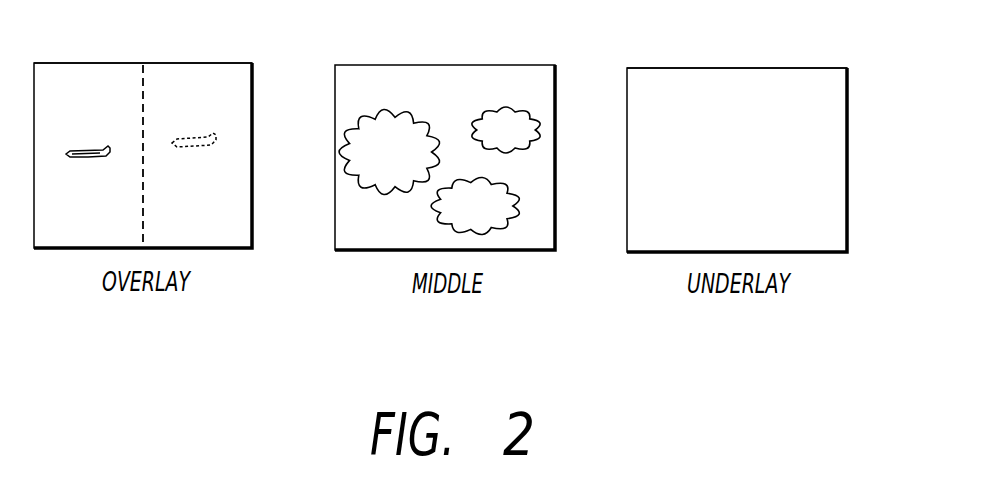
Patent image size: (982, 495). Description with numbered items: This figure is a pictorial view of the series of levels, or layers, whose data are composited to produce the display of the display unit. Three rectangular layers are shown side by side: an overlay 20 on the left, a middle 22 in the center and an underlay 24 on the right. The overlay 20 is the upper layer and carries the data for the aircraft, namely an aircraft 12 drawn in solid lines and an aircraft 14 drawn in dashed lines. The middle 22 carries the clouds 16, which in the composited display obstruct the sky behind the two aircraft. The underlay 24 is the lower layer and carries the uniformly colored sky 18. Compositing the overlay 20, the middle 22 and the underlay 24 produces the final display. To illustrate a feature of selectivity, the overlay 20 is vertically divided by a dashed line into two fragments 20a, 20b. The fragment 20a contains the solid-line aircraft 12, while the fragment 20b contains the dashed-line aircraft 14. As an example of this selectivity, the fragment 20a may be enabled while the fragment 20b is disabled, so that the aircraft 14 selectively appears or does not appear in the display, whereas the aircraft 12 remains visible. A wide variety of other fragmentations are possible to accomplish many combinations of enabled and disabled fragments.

The aircraft 12 is at (92, 158).
The aircraft 14 is at (197, 148).
The clouds 16 is at (475, 177).
The sky 18 is at (822, 143).
The overlay 20 is at (199, 60).
The fragment 20a is at (78, 63).
The fragment 20b is at (252, 87).
The middle 22 is at (400, 65).
The underlay 24 is at (668, 68).